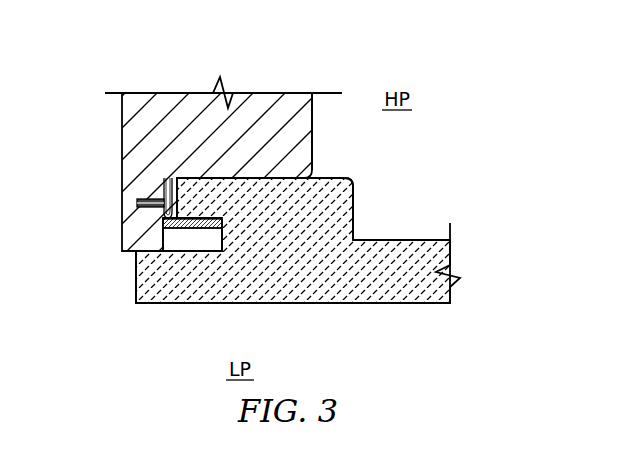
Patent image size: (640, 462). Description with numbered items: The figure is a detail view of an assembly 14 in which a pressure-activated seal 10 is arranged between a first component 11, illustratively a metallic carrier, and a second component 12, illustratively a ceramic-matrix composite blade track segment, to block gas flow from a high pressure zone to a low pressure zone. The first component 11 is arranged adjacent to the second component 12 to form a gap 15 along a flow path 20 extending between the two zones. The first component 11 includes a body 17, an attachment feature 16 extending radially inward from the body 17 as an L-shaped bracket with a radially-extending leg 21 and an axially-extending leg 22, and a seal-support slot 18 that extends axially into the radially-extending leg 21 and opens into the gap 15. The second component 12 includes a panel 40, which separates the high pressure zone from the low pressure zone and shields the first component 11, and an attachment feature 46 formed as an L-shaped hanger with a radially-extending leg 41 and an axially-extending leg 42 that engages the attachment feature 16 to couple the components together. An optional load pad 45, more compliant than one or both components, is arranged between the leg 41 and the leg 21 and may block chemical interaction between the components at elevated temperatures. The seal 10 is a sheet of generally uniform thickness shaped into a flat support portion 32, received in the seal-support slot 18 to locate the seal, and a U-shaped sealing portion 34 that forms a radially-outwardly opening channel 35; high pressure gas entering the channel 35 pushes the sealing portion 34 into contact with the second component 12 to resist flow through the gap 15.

The pressure-activated seal 10 is at (111, 194).
The first component 11 is at (120, 109).
The second component 12 is at (308, 312).
The assembly 14 is at (340, 128).
The gap 15 is at (166, 176).
The attachment feature 16 is at (120, 152).
The body 17 is at (284, 113).
The seal-support slot 18 is at (138, 200).
The flow path 20 is at (316, 172).
The radially-extending leg 21 is at (126, 200).
The axially-extending leg 22 is at (192, 240).
The support portion 32 is at (142, 216).
The sealing portion 34 is at (145, 253).
The channel 35 is at (171, 207).
The panel 40 is at (246, 290).
The radially-extending leg 41 is at (329, 228).
The axially-extending leg 42 is at (233, 182).
The load pad 45 is at (216, 213).
The attachment feature 46 is at (356, 197).